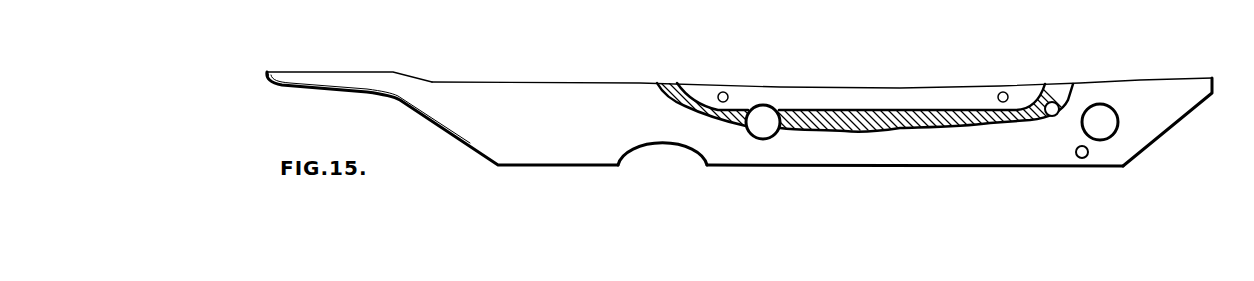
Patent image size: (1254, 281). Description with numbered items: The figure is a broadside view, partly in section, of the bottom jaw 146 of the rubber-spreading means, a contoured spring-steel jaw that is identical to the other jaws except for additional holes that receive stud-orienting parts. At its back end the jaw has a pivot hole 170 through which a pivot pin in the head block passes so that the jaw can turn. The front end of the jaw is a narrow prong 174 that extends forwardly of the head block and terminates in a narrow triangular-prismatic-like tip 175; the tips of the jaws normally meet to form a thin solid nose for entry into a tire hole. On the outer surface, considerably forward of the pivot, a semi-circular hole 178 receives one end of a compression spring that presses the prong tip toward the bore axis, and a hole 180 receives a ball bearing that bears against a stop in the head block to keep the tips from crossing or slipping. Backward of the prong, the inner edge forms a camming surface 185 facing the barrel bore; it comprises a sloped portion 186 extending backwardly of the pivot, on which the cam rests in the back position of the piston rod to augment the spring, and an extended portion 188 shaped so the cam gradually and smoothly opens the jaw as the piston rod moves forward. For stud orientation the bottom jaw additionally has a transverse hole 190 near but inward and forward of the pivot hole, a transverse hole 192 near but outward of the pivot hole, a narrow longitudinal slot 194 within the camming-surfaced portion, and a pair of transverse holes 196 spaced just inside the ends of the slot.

The jaw 146 is at (940, 168).
The pivot hole 170 is at (1105, 128).
The prong 174 is at (369, 80).
The tip 175 is at (286, 60).
The semi-circular hole 178 is at (631, 154).
The hole 180 is at (762, 127).
The camming surface 185 is at (739, 118).
The sloped portion 186 is at (1162, 73).
The extended portion 188 is at (440, 82).
The transverse hole 190 is at (1056, 109).
The transverse hole 192 is at (1082, 159).
The longitudinal slot 194 is at (877, 78).
The transverse holes 196 is at (728, 96).